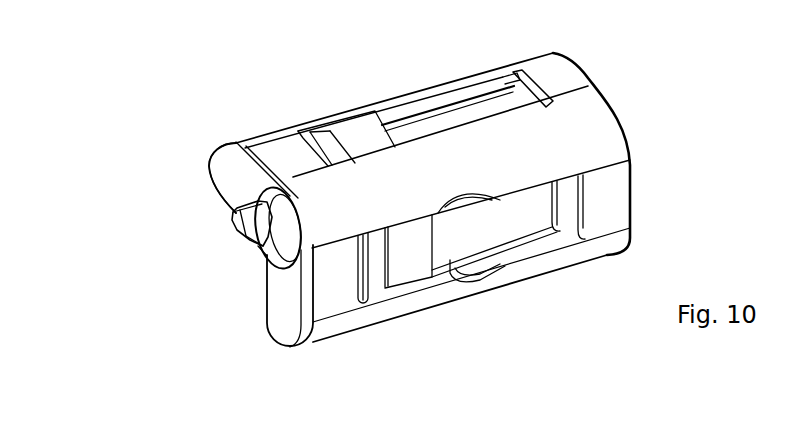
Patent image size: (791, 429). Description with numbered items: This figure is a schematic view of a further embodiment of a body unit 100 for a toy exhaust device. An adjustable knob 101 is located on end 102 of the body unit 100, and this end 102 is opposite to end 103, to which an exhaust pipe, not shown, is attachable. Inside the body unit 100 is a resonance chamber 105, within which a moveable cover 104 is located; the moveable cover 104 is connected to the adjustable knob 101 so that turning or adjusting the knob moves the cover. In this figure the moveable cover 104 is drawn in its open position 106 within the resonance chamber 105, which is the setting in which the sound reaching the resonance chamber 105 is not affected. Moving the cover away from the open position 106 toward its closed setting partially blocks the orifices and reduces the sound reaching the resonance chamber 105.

The body unit 100 is at (178, 149).
The adjustable knob 101 is at (250, 231).
The end 102 is at (233, 164).
The end 103 is at (600, 78).
The moveable cover 104 is at (401, 260).
The resonance chamber 105 is at (468, 229).
The open position 106 is at (374, 260).